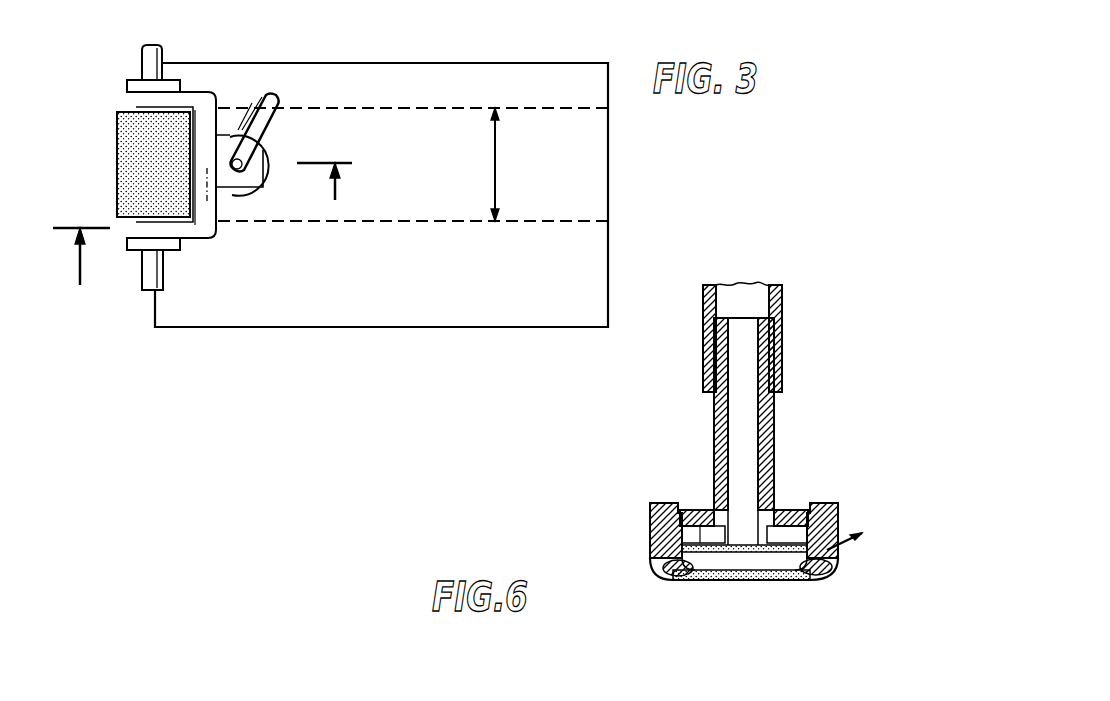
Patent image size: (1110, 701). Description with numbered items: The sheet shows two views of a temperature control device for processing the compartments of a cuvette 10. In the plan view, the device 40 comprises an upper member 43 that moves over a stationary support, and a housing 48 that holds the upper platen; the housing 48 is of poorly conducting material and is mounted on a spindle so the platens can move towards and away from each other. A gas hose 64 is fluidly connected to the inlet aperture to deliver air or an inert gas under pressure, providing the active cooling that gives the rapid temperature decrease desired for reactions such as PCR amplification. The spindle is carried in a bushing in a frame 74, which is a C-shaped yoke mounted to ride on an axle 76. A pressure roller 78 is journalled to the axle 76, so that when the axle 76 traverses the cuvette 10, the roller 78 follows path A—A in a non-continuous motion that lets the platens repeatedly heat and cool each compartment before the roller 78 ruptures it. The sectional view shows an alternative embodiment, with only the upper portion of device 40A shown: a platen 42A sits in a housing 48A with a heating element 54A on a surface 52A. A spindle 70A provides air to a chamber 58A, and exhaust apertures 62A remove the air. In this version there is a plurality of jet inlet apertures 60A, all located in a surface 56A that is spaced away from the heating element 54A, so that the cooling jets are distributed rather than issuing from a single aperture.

In FIG. 3, the cuvette 10 is at (513, 299).
In FIG. 3, the device 40 is at (202, 327).
In FIG. 3, the upper member 43 is at (228, 243).
In FIG. 3, the housing 48 is at (272, 173).
In FIG. 3, the gas hose 64 is at (263, 125).
In FIG. 3, the frame 74 is at (213, 102).
In FIG. 3, the axle 76 is at (142, 63).
In FIG. 3, the pressure roller 78 is at (118, 163).
In FIG. 6, the device 40A is at (827, 487).
In FIG. 6, the platen 42A is at (793, 580).
In FIG. 6, the housing 48A is at (837, 507).
In FIG. 6, the surface 52A is at (660, 570).
In FIG. 6, the heating element 54A is at (708, 580).
In FIG. 6, the surface 56A is at (773, 520).
In FIG. 6, the chamber 58A is at (753, 560).
In FIG. 6, the jet inlet apertures 60A is at (702, 517).
In FIG. 6, the exhaust apertures 62A is at (833, 548).
In FIG. 6, the spindle 70A is at (773, 415).